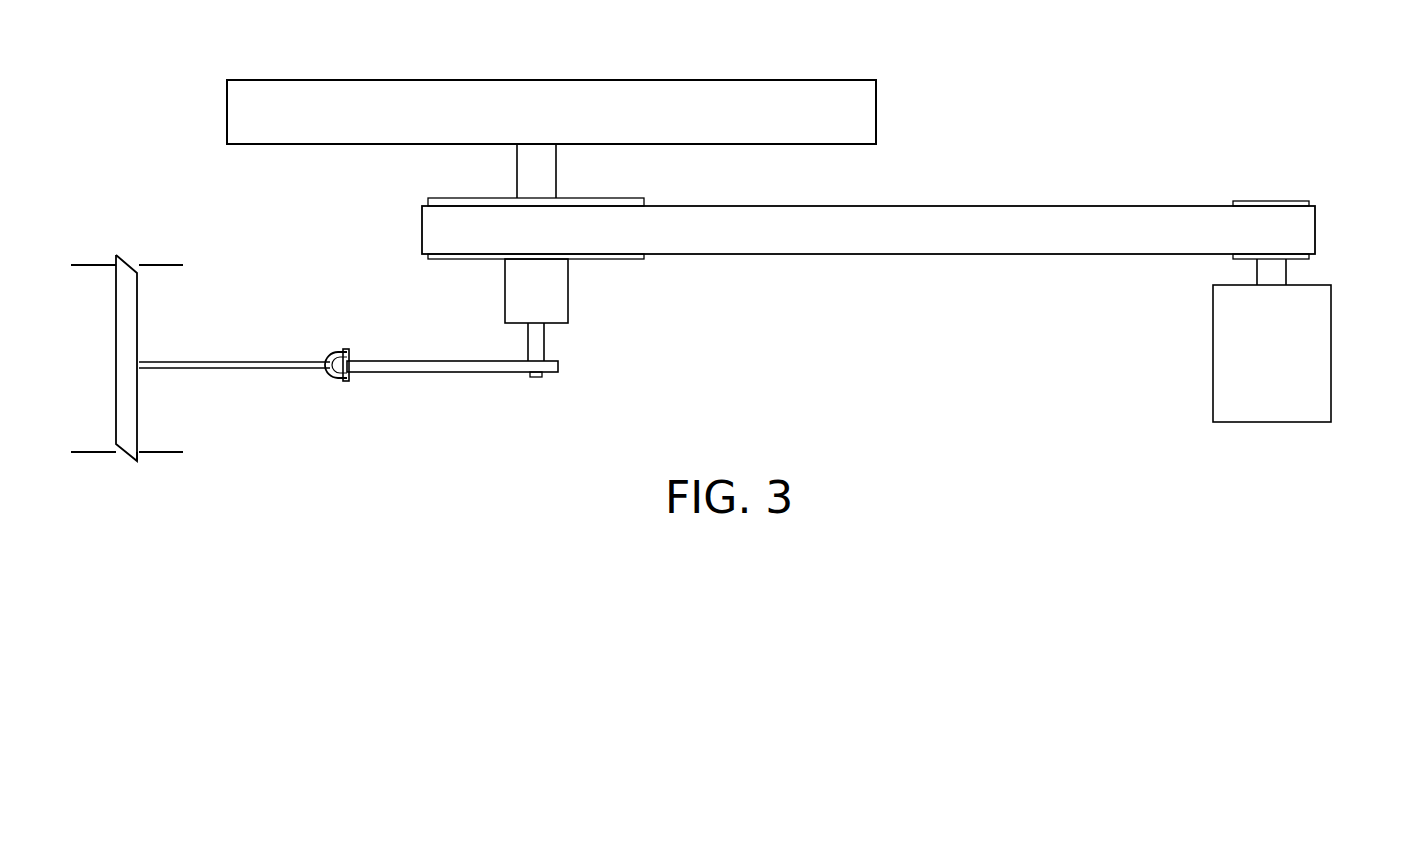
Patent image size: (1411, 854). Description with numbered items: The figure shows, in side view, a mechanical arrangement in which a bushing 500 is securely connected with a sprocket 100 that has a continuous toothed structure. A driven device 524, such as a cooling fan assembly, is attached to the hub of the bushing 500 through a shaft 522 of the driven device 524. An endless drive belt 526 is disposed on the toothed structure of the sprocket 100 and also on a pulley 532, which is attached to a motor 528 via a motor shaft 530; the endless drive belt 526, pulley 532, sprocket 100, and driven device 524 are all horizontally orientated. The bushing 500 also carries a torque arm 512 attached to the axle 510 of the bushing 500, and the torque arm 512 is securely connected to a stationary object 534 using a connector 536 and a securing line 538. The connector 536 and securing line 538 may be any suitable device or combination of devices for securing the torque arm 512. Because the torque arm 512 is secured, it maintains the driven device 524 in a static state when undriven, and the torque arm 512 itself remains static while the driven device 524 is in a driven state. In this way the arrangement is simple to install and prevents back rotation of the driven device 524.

The sprocket 100 is at (446, 198).
The bushing 500 is at (504, 290).
The axle 510 is at (545, 341).
The torque arm 512 is at (450, 373).
The shaft 522 is at (556, 172).
The driven device 524 is at (270, 80).
The endless drive belt 526 is at (980, 206).
The motor 528 is at (1298, 368).
The motor shaft 530 is at (1287, 266).
The pulley 532 is at (1270, 201).
The stationary object 534 is at (140, 336).
The connector 536 is at (333, 355).
The securing line 538 is at (235, 372).